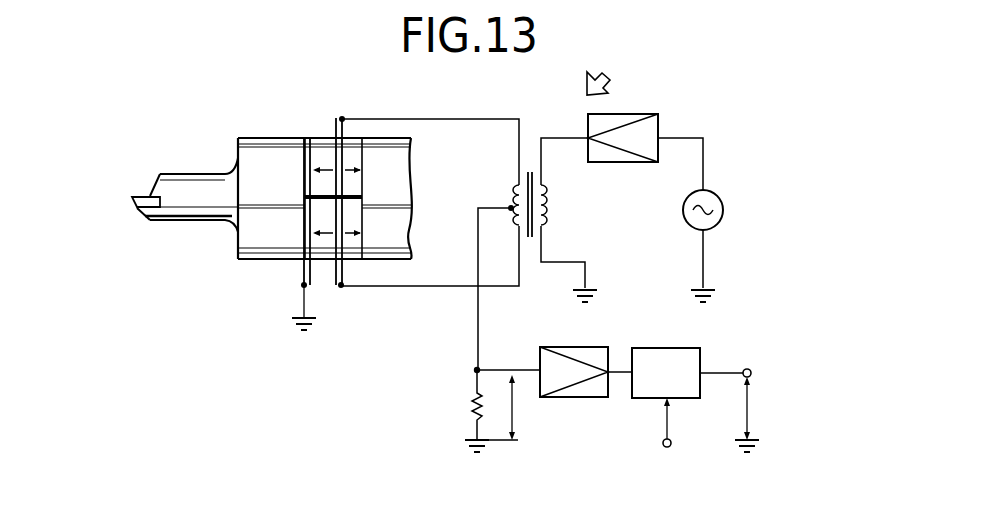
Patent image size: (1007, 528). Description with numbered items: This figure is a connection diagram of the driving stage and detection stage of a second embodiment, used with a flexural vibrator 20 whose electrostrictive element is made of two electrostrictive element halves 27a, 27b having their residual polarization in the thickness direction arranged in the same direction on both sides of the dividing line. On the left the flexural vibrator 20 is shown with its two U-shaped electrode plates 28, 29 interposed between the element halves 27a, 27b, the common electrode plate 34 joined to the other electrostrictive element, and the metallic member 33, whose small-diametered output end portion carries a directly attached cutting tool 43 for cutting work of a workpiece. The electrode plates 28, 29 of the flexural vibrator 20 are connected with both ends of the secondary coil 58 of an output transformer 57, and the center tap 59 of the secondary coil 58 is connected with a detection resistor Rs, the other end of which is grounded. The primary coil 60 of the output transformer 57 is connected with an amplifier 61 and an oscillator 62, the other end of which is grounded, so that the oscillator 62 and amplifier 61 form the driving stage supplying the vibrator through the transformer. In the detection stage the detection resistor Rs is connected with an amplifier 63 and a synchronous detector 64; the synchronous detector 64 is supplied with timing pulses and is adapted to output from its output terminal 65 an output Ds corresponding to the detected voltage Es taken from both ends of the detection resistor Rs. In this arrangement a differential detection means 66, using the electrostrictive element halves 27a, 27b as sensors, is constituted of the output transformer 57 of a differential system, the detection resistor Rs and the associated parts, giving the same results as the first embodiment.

The flexural vibrator 20 is at (253, 152).
The electrostrictive element half 27a is at (320, 150).
The electrostrictive element half 27b is at (326, 262).
The electrode plate 28 is at (336, 124).
The electrode plate 29 is at (332, 272).
The metallic member 33 is at (192, 183).
The common electrode plate 34 is at (302, 268).
The cutting tool 43 is at (140, 197).
The output transformer 57 is at (530, 170).
The secondary coil 58 is at (516, 184).
The center tap 59 is at (509, 207).
The primary coil 60 is at (549, 197).
The amplifier 61 is at (635, 118).
The oscillator 62 is at (724, 209).
The amplifier 63 is at (584, 392).
The synchronous detector 64 is at (666, 360).
The output terminal 65 is at (748, 368).
The differential detection means 66 is at (610, 70).
The detection resistor Rs is at (463, 409).
The detected voltage Es is at (515, 407).
The output Ds is at (756, 414).